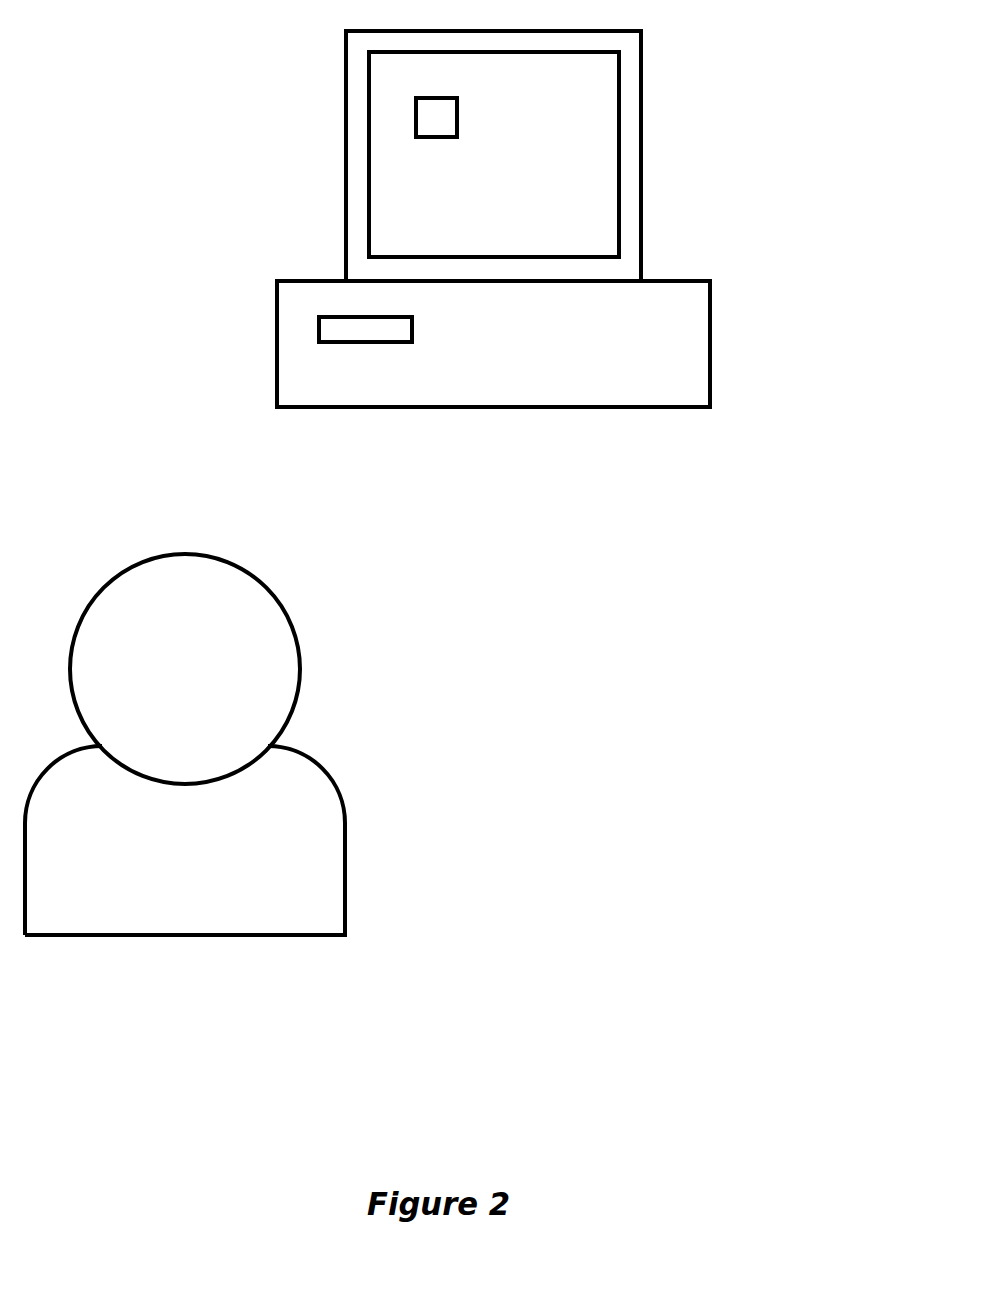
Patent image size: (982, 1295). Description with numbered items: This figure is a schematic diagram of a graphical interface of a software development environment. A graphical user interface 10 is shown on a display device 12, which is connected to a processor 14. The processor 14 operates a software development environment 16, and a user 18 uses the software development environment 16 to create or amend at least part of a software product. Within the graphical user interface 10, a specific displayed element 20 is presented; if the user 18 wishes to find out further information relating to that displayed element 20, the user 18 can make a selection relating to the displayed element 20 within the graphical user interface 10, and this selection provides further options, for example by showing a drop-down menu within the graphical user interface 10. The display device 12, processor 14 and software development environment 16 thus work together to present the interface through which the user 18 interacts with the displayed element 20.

The graphical user interface 10 is at (619, 196).
The display device 12 is at (641, 127).
The processor 14 is at (710, 325).
The software development environment 16 is at (319, 330).
The user 18 is at (345, 838).
The displayed element 20 is at (413, 119).